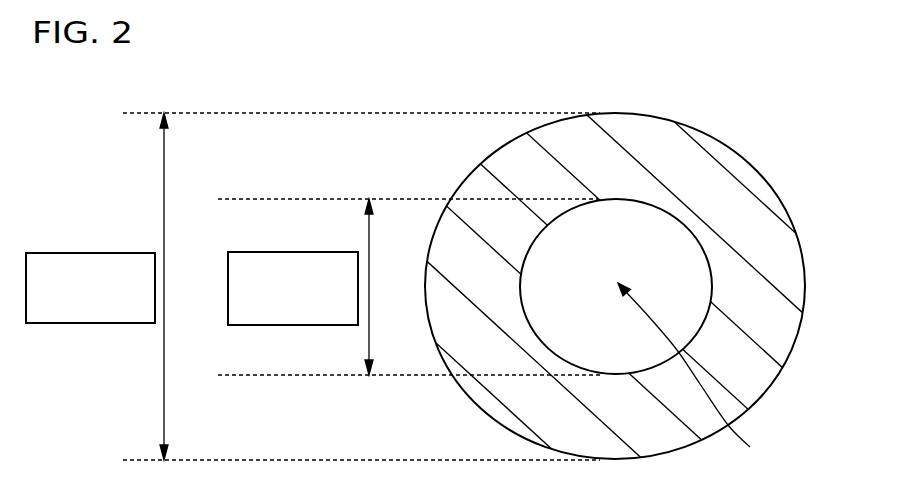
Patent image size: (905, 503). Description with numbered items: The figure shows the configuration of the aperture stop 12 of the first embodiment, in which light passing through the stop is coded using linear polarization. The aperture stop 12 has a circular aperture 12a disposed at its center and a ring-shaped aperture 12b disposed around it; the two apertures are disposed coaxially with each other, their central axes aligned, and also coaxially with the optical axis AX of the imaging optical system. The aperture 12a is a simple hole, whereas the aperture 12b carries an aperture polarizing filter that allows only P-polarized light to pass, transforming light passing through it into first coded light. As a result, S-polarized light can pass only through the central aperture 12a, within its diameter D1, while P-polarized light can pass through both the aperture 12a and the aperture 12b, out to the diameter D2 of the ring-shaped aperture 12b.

The aperture stop 12 is at (609, 251).
The aperture (second aperture) 12a is at (668, 255).
The ring-shaped aperture (first aperture) 12b is at (590, 143).
The optical axis AX is at (700, 376).
The diameter of the aperture 12a D1 is at (409, 287).
The diameter of the aperture 12b D2 is at (313, 286).